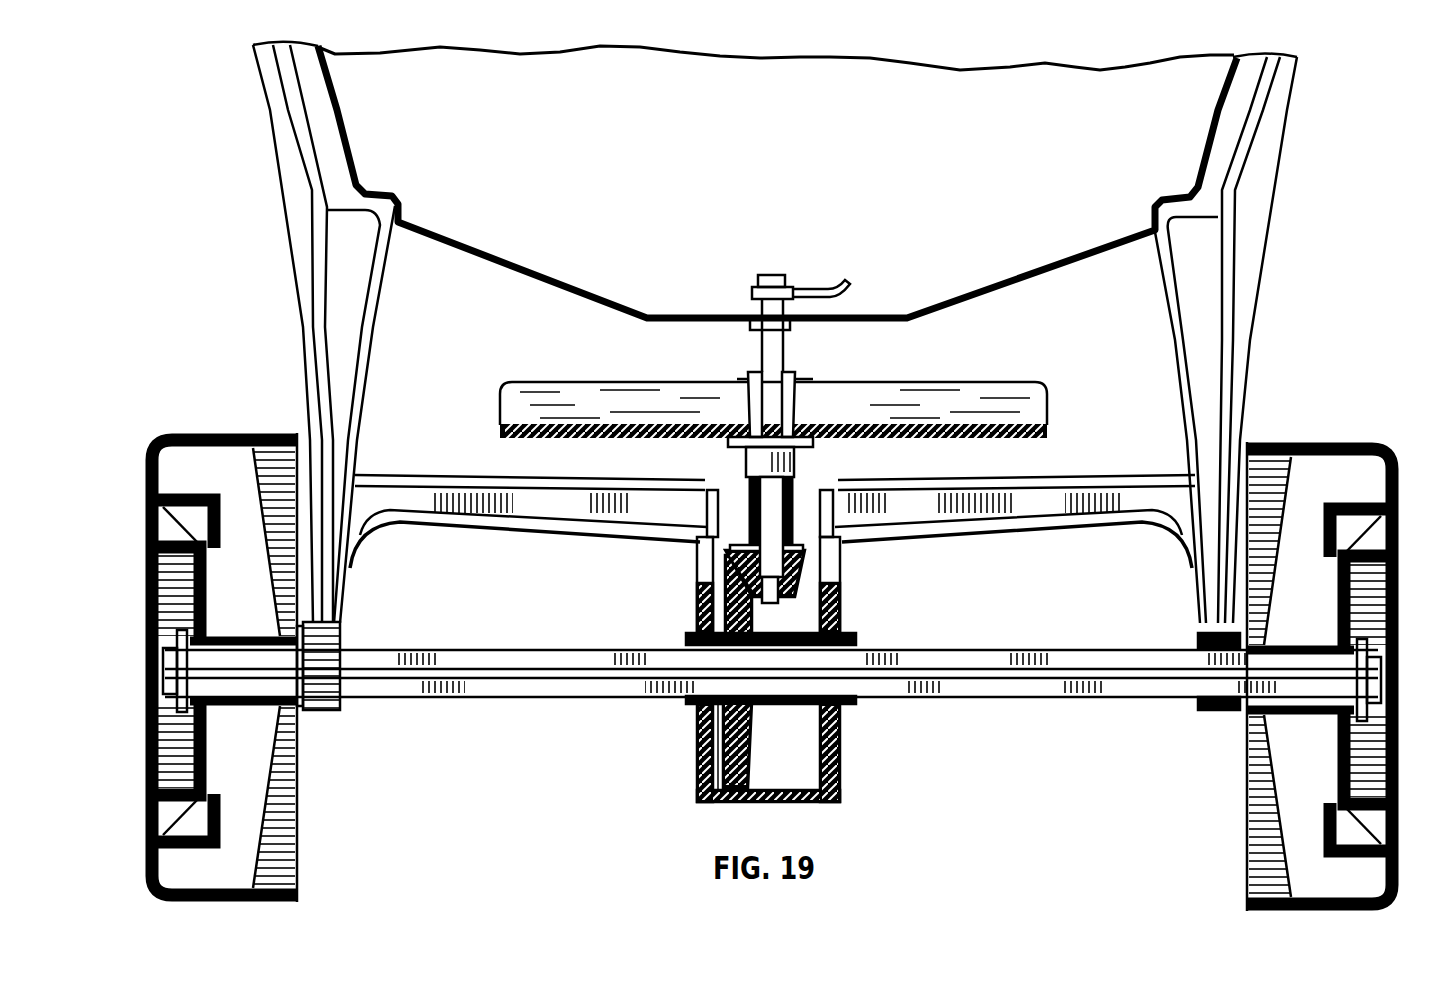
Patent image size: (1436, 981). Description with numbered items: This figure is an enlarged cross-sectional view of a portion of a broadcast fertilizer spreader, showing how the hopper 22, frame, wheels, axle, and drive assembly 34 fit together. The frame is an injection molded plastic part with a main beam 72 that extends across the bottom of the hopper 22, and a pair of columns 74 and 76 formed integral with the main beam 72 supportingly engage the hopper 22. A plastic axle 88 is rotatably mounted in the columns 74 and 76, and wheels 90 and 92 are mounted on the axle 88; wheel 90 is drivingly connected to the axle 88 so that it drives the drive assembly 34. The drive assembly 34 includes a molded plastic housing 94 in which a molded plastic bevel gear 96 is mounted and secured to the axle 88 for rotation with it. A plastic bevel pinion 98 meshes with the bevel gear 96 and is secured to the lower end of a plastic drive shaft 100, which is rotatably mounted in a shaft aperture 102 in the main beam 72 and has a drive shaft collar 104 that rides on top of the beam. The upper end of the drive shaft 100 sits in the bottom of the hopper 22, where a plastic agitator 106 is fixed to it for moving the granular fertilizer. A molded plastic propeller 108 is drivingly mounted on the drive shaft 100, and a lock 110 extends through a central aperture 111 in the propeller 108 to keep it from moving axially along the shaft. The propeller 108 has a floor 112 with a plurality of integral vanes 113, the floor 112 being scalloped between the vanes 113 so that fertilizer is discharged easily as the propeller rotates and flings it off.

The hopper 22 is at (555, 284).
The drive assembly 34 is at (846, 753).
The main beam 72 is at (1062, 522).
The column 74 is at (1200, 310).
The column 76 is at (345, 276).
The axle 88 is at (523, 688).
The wheel 90 is at (1300, 444).
The wheel 92 is at (200, 440).
The housing 94 is at (735, 803).
The bevel gear 96 is at (742, 612).
The bevel pinion 98 is at (818, 575).
The drive shaft 100 is at (792, 527).
The shaft aperture 102 is at (750, 510).
The drive shaft collar 104 is at (800, 460).
The agitator 106 is at (815, 292).
The propeller 108 is at (818, 390).
The lock 110 is at (795, 378).
The central aperture 111 is at (748, 405).
The floor 112 is at (1023, 440).
The vanes 113 is at (945, 393).